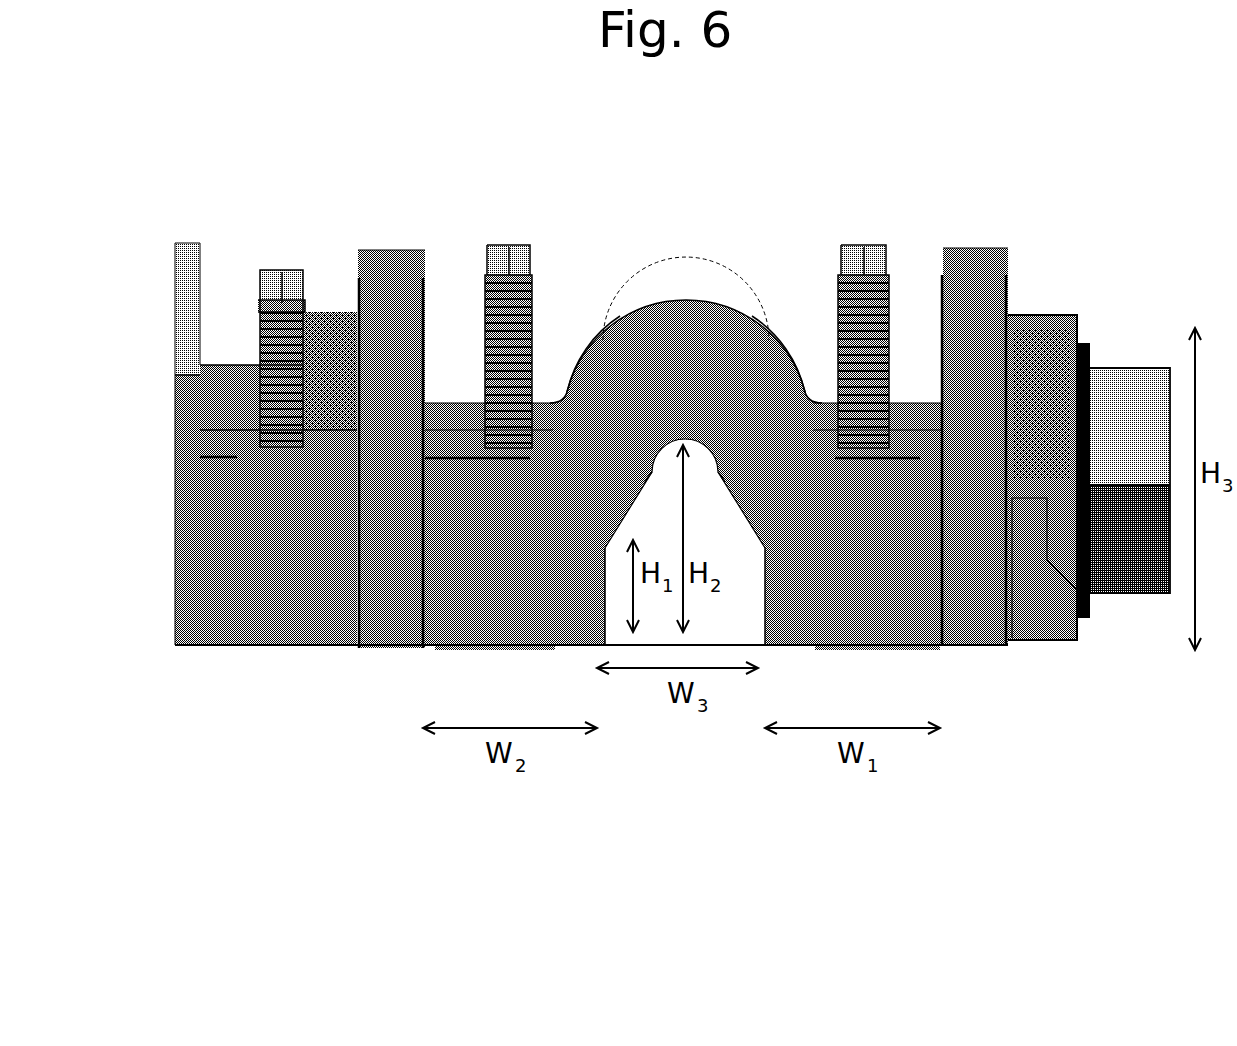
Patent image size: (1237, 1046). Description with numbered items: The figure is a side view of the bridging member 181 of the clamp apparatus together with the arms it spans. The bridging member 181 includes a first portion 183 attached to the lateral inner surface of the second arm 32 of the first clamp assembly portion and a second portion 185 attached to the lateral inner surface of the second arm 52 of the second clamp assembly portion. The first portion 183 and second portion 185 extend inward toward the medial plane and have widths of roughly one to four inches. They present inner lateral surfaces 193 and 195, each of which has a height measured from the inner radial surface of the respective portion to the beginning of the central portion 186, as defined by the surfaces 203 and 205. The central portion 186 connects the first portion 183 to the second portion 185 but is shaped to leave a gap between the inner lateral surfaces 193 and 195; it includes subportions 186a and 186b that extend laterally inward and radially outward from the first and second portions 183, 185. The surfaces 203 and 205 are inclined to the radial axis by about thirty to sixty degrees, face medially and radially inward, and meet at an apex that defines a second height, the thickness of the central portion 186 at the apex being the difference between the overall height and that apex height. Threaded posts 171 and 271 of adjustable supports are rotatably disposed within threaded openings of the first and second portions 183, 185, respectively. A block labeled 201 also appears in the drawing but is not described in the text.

The second arm 32 is at (977, 277).
The second arm 52 is at (387, 273).
The threaded post 171 is at (885, 317).
The bridging member 181 is at (690, 510).
The first portion 183 is at (862, 608).
The second portion 185 is at (480, 608).
The central portion 186 is at (687, 350).
The subportion 186a is at (767, 413).
The subportion 186b is at (593, 415).
The inner lateral surface 193 is at (762, 597).
The inner lateral surface 195 is at (605, 595).
The base member 201 is at (235, 607).
The surface 203 is at (718, 472).
The surface 205 is at (652, 470).
The threaded post 271 is at (492, 327).